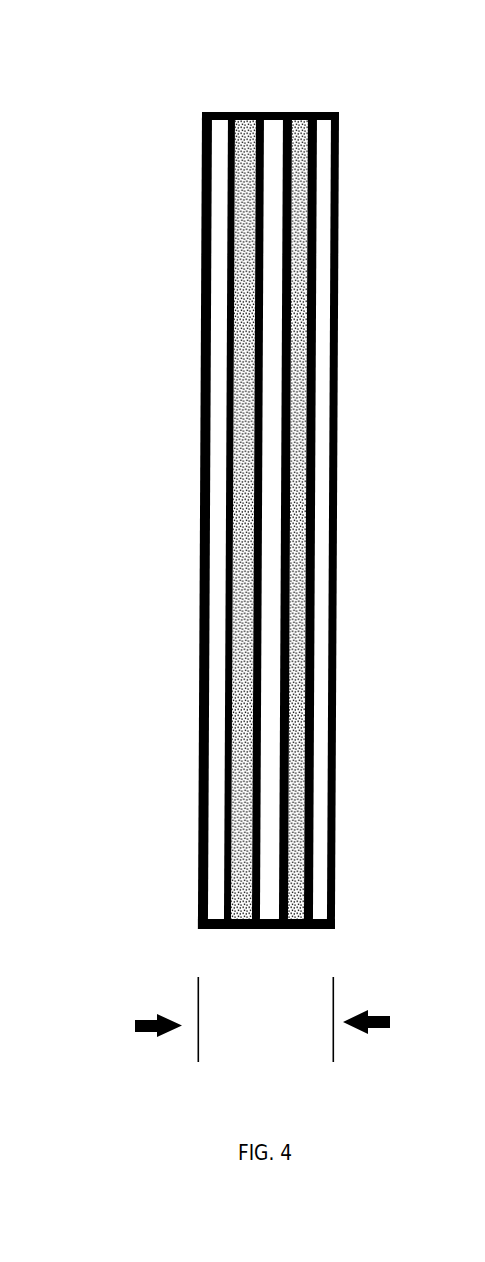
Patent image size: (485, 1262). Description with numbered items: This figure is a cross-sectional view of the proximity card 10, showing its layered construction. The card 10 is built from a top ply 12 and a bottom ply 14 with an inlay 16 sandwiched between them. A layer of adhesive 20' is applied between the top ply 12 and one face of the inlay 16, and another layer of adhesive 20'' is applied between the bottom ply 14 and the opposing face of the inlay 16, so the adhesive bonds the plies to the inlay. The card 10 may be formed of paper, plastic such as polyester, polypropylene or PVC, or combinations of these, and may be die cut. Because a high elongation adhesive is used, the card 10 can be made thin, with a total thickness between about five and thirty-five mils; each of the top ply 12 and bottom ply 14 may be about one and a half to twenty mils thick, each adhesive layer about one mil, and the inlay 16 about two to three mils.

The card 10 is at (104, 133).
The top ply 12 is at (222, 113).
The bottom ply 14 is at (327, 113).
The inlay 16 is at (274, 113).
The layer of adhesive 20' is at (244, 480).
The layer of adhesive 20'' is at (306, 480).